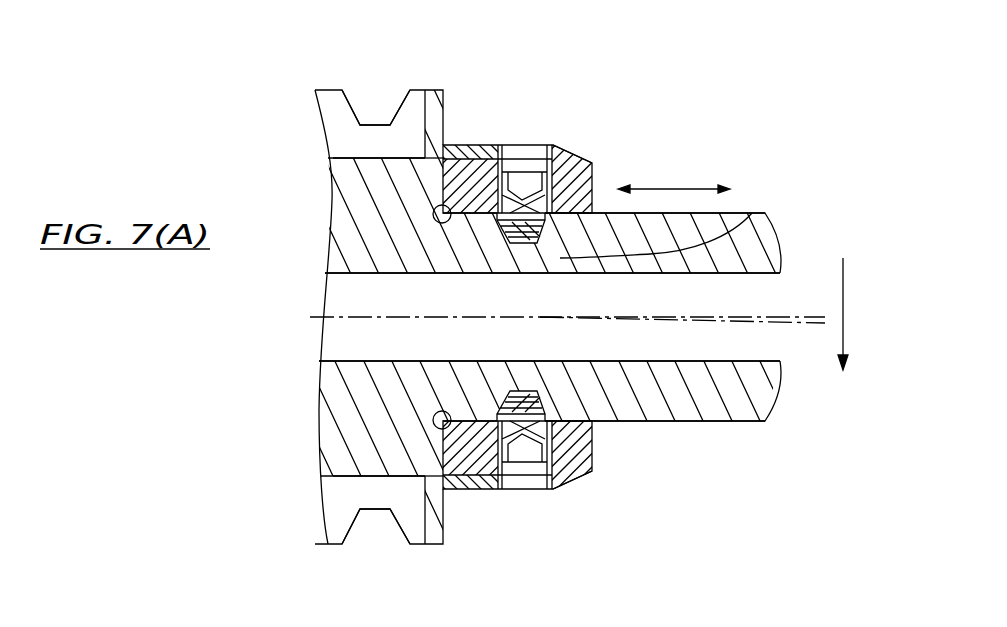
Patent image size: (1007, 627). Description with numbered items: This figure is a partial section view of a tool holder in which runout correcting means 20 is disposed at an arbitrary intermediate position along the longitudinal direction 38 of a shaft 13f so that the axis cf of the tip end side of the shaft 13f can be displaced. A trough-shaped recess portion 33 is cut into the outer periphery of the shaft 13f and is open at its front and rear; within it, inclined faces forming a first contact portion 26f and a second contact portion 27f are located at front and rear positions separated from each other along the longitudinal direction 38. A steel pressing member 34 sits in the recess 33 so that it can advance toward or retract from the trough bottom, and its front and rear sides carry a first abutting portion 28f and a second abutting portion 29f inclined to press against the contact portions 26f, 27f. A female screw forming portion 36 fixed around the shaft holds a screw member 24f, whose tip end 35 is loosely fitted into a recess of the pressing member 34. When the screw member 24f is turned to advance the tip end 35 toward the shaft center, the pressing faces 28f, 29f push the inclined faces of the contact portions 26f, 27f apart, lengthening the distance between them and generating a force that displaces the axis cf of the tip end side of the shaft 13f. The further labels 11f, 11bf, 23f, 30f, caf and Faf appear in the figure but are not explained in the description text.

The flange member 11f is at (420, 464).
The boss portion of flange 11bf is at (435, 445).
The shaft 13f is at (723, 413).
The runout correcting means 20 is at (531, 137).
The seal lip 23f is at (508, 166).
The screw member 24f is at (485, 157).
The first contact portion 26f is at (530, 236).
The second contact portion 27f is at (560, 236).
The first abutting portion 28f is at (433, 211).
The second abutting portion 29f is at (608, 214).
The housing end face 30f is at (474, 490).
The trough-shaped recess portion 33 is at (520, 252).
The pressing member 34 is at (750, 212).
The tip end 35 is at (574, 156).
The female screw forming portion 36 is at (397, 123).
The longitudinal direction 38 is at (669, 188).
The axis of flange caf is at (761, 316).
The axis of tip end side of shaft cf is at (748, 322).
The axial force Faf is at (845, 297).